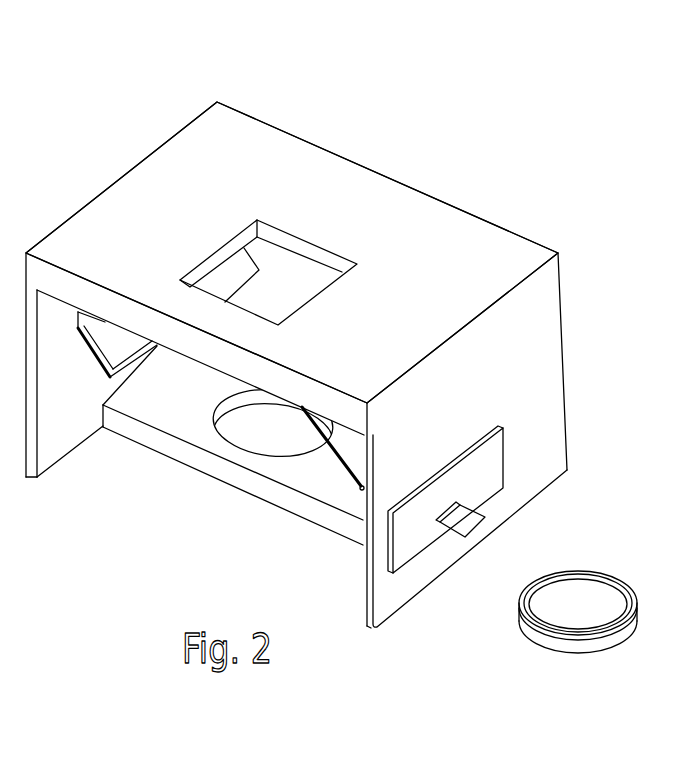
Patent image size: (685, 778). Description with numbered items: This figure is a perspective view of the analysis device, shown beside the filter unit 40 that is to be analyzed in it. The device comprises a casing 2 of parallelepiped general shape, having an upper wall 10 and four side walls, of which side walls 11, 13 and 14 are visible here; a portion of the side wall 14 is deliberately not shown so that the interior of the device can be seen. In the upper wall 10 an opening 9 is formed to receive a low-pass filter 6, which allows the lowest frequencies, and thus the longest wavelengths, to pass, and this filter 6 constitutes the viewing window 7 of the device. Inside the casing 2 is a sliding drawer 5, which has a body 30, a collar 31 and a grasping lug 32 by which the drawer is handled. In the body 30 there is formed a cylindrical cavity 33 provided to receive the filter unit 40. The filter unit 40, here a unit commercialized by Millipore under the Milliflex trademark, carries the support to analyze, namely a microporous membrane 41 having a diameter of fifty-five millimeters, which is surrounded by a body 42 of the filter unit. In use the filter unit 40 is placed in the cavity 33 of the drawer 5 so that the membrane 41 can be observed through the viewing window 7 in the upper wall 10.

The casing 2 is at (370, 183).
The sliding drawer 5 is at (160, 501).
The low-pass filter 6 is at (267, 252).
The viewing window 7 is at (229, 200).
The opening 9 is at (322, 292).
The upper wall 10 is at (455, 217).
The side wall 11 is at (45, 442).
The side wall 13 is at (550, 345).
The side wall 14 is at (75, 290).
The body 30 is at (288, 503).
The collar 31 is at (497, 458).
The grasping lug 32 is at (465, 523).
The cylindrical cavity 33 is at (240, 428).
The filter unit 40 is at (614, 550).
The microporous membrane 41 is at (550, 622).
The body 42 is at (582, 652).